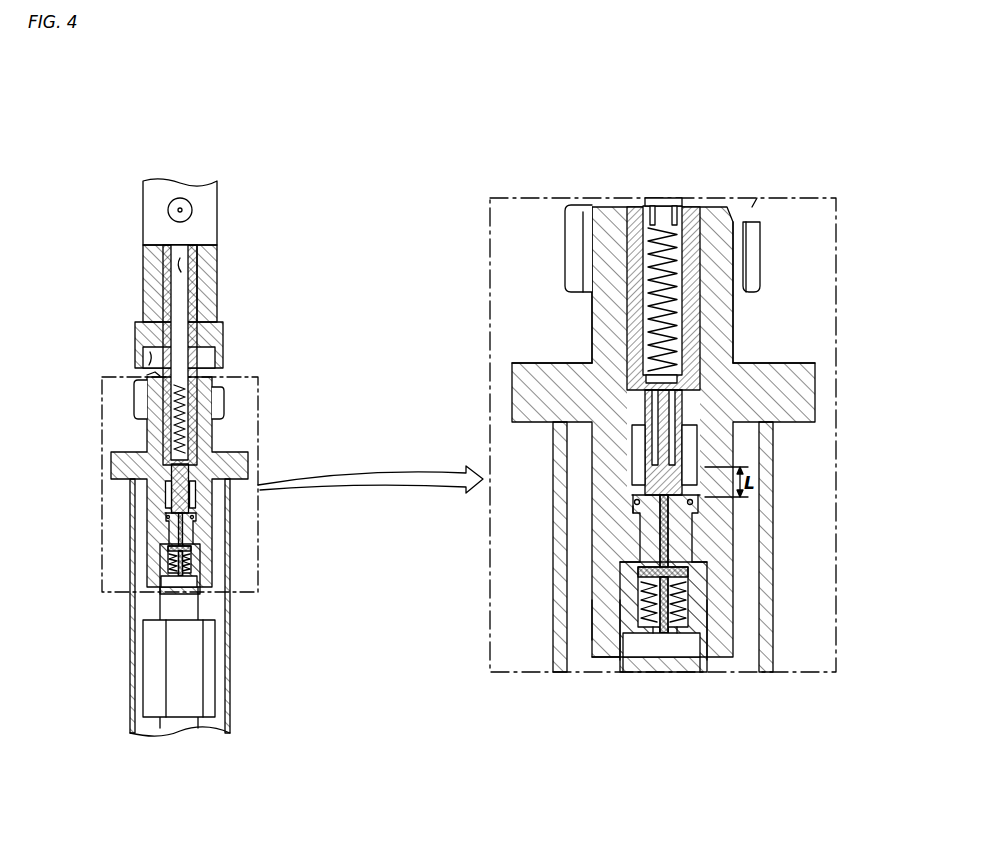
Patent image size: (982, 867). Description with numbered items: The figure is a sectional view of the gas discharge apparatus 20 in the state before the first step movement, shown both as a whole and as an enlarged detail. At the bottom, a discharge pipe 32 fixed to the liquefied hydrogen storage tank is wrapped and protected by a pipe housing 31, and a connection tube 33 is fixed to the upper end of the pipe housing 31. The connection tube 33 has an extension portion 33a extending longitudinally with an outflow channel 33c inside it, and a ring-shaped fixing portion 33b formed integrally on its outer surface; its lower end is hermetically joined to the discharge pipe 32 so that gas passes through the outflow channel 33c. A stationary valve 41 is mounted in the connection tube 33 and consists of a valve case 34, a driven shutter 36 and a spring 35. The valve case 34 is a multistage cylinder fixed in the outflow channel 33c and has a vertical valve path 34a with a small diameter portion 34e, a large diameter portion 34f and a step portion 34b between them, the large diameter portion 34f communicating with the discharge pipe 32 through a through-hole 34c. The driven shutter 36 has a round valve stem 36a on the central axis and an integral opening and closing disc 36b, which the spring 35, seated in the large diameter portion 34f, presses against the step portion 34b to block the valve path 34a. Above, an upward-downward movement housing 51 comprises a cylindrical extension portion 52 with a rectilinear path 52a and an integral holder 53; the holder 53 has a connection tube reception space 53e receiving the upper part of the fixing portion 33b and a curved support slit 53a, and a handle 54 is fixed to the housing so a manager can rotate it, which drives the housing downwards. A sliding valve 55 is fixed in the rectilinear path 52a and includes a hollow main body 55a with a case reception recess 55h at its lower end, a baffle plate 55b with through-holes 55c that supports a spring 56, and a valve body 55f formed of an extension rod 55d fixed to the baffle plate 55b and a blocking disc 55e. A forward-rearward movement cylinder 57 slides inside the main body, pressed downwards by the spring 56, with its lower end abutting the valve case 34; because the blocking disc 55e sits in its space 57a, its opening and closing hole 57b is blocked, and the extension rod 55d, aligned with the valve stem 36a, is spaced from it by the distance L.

The gas discharge apparatus 20 is at (328, 298).
The pipe housing 31 is at (557, 600).
The discharge pipe 32 is at (662, 645).
The connection tube 33 is at (606, 432).
The extension portion 33a is at (600, 338).
The fixing portion 33b is at (520, 400).
The outflow channel 33c is at (608, 243).
The valve case 34 is at (664, 646).
The valve path 34a is at (645, 630).
The step portion 34b is at (638, 568).
The through-hole 34c is at (675, 628).
The small diameter portion 34e is at (695, 560).
The large diameter portion 34f is at (706, 640).
The spring 35 is at (710, 600).
The driven shutter 36 is at (786, 569).
The valve stem 36a is at (700, 503).
The opening and closing disc 36b is at (694, 520).
The stationary valve 41 is at (610, 617).
The upward-downward movement housing 51 is at (129, 273).
The extension portion 52 is at (143, 297).
The rectilinear path 52a is at (200, 312).
The holder 53 is at (138, 340).
The support slit 53a is at (150, 378).
The connection tube reception space 53e is at (148, 365).
The handle 54 is at (181, 197).
The sliding valve 55 is at (728, 318).
The main body 55a is at (693, 283).
The baffle plate 55b is at (657, 205).
The through-holes 55c is at (676, 205).
The extension rod 55d is at (688, 350).
The blocking disc 55e is at (690, 405).
The valve body 55f is at (900, 288).
The case reception recess 55h is at (708, 445).
The spring 56 is at (660, 300).
The forward-rearward movement cylinder 57 is at (560, 529).
The space 57a is at (660, 515).
The opening and closing hole 57b is at (636, 440).